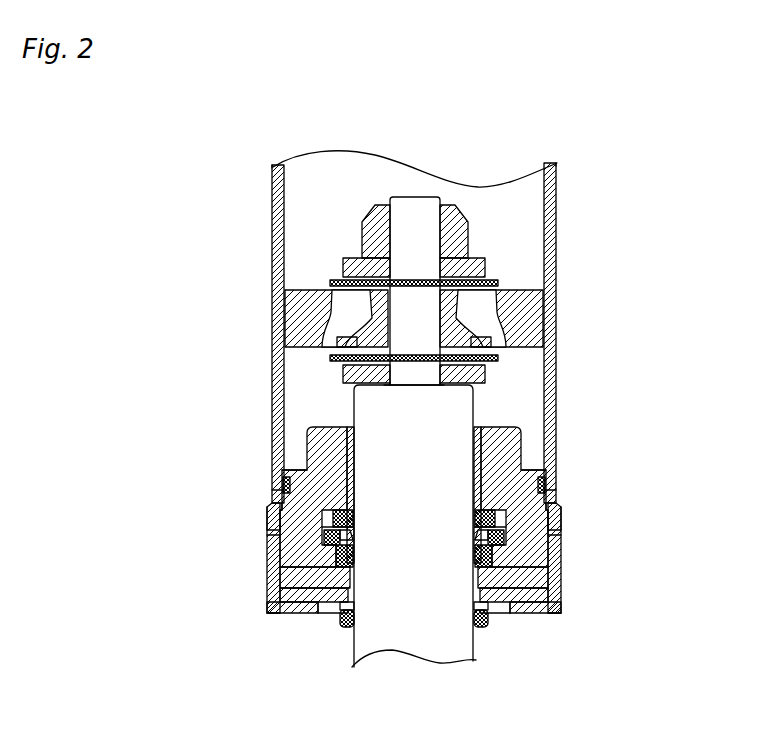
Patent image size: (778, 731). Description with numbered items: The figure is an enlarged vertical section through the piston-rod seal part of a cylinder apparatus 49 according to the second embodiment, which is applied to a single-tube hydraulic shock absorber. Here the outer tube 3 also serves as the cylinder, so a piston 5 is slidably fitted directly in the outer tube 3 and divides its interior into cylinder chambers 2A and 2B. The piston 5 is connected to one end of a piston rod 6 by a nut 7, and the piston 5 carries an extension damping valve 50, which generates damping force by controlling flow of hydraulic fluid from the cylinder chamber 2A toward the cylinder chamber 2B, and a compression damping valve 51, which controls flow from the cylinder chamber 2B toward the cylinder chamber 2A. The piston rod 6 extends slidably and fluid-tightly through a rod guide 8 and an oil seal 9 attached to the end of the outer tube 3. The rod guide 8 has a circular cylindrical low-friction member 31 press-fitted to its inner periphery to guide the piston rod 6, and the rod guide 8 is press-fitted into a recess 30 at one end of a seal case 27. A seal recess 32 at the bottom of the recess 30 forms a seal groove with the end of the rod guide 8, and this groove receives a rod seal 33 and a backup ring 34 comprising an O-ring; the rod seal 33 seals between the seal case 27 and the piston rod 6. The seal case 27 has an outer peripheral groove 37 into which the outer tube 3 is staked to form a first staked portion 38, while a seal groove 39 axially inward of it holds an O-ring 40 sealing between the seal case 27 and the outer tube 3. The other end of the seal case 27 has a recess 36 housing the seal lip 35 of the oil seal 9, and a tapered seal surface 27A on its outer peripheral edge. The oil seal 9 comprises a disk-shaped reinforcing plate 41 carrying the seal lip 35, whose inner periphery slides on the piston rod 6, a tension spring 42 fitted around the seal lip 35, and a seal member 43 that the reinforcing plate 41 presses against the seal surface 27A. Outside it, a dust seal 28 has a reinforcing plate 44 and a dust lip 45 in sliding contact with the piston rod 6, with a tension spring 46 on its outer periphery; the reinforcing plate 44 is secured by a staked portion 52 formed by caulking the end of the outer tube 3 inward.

The cylinder chamber 2A is at (530, 405).
The cylinder chamber 2B is at (500, 212).
The outer tube 3 is at (548, 240).
The piston 5 is at (546, 310).
The piston rod 6 is at (397, 632).
The nut 7 is at (360, 236).
The rod guide 8 is at (320, 440).
The oil seal 9 is at (550, 573).
The seal case 27 is at (556, 500).
The tapered seal surface 27A is at (270, 580).
The dust seal 28 is at (550, 612).
The recess 30 is at (300, 470).
The low-friction member 31 is at (348, 430).
The seal recess 32 is at (556, 510).
The rod seal 33 is at (340, 516).
The backup ring 34 is at (336, 553).
The seal lip 35 is at (546, 558).
The recess 36 is at (552, 522).
The outer peripheral groove 37 is at (280, 532).
The first staked portion 38 is at (270, 522).
The seal groove 39 is at (284, 485).
The O-ring 40 is at (556, 485).
The reinforcing plate 41 is at (556, 590).
The tension spring 42 is at (550, 537).
The seal member 43 is at (258, 600).
The reinforcing plate 44 is at (272, 606).
The dust lip 45 is at (347, 628).
The tension spring 46 is at (342, 620).
The cylinder apparatus 49 is at (645, 197).
The extension damping valve 50 is at (330, 286).
The compression damping valve 51 is at (512, 358).
The staked portion 52 is at (520, 616).